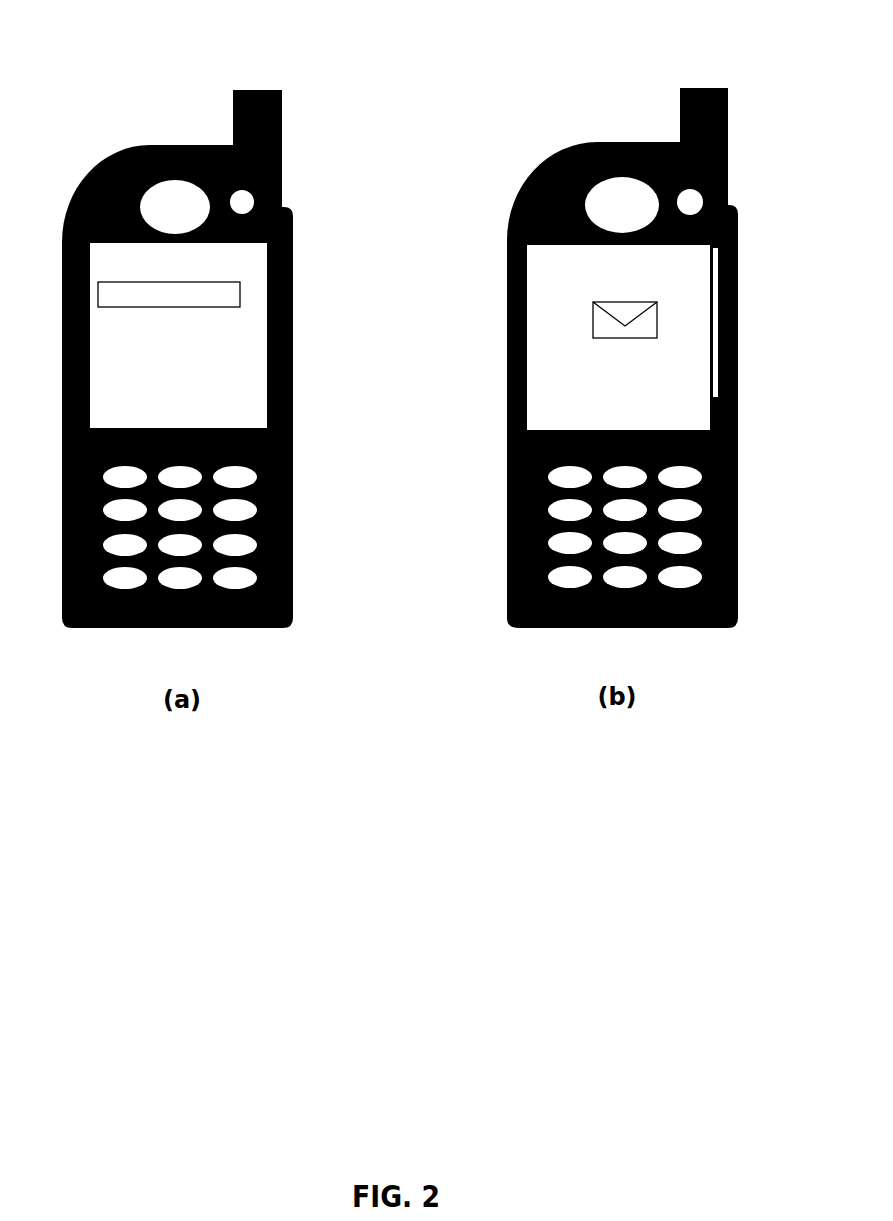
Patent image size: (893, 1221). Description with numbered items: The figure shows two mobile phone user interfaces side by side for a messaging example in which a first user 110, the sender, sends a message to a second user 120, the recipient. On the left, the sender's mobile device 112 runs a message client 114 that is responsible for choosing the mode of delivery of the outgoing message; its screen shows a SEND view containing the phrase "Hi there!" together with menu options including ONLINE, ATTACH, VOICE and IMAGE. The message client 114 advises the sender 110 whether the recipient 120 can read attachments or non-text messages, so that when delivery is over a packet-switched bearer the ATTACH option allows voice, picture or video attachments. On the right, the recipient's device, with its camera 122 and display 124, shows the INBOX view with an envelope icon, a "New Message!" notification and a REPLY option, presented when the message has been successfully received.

The first user 110 is at (205, 316).
The mobile device 112 is at (290, 210).
The message client 114 is at (247, 342).
The second user 120 is at (627, 316).
The camera of second mobile terminal 122 is at (730, 202).
The display screen of second mobile terminal showing inbox 124 is at (695, 333).